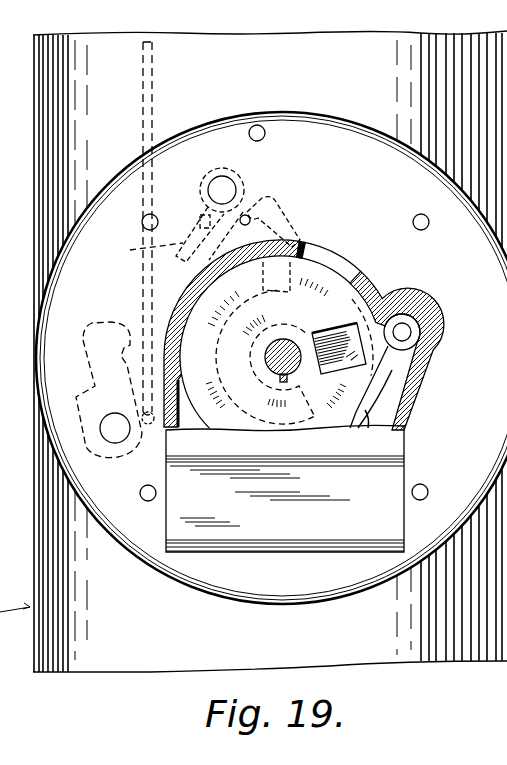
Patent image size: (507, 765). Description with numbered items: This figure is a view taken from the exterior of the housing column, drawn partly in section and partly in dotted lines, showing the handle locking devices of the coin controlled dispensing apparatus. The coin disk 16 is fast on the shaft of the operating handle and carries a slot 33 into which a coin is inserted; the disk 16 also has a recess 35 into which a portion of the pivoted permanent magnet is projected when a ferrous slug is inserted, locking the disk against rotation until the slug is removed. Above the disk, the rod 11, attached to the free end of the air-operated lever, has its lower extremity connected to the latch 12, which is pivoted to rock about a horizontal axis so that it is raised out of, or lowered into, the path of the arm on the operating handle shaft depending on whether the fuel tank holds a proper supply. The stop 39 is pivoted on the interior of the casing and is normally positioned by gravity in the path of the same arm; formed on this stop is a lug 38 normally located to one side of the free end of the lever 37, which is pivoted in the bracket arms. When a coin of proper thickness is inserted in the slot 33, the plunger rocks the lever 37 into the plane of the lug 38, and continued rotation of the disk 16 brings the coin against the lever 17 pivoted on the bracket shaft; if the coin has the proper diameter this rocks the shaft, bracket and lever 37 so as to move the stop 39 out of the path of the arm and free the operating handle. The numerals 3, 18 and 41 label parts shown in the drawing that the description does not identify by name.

The disk 3 is at (138, 540).
The rod 11 is at (152, 97).
The latch 12 is at (100, 326).
The disk 16 is at (353, 397).
The lever 17 is at (405, 347).
The lever 18 is at (407, 377).
The slot 33 is at (335, 287).
The recess 35 is at (313, 249).
The lever 37 is at (282, 217).
The lug 38 is at (213, 215).
The stop 39 is at (144, 251).
The block 41 is at (327, 336).